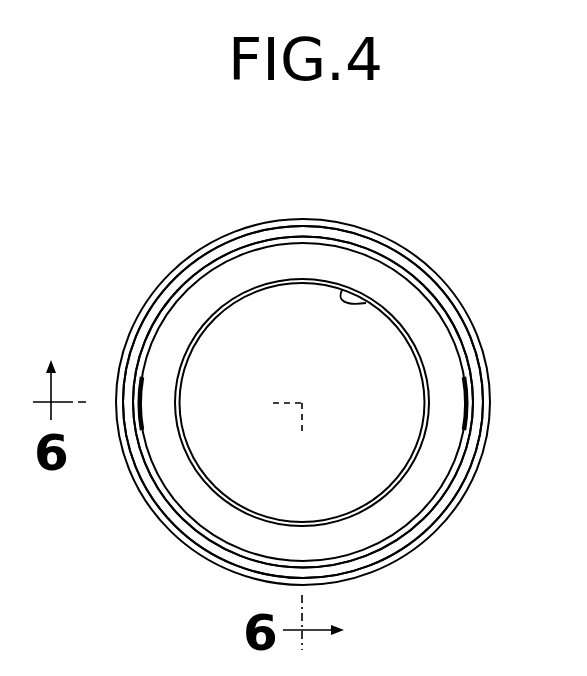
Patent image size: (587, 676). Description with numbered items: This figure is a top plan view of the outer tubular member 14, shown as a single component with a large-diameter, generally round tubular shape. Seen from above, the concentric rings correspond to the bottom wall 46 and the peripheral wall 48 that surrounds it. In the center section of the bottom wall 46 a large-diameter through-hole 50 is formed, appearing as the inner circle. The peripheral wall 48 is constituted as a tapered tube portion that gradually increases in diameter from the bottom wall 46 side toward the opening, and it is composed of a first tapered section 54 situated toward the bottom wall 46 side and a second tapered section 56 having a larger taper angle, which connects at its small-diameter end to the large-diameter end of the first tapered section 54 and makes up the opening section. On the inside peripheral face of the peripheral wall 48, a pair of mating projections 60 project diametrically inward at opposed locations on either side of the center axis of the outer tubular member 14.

The outer tubular member 14 is at (400, 229).
The bottom wall 46 is at (252, 264).
The peripheral wall 48 is at (84, 272).
The large-diameter through-hole 50 is at (372, 300).
The first tapered section 54 is at (163, 318).
The second tapered section 56 is at (146, 333).
The mating projections 60 is at (139, 410).